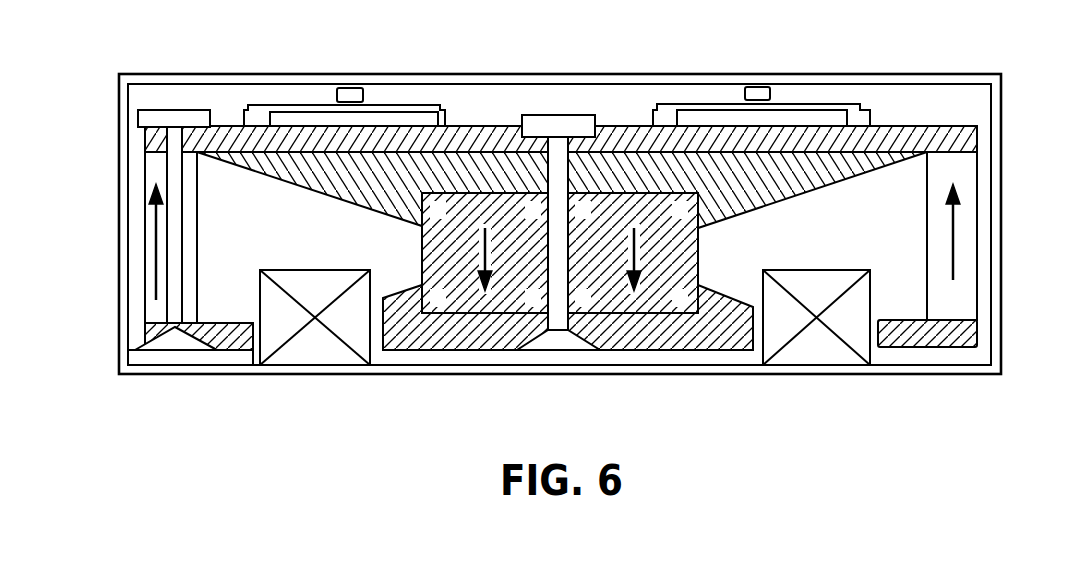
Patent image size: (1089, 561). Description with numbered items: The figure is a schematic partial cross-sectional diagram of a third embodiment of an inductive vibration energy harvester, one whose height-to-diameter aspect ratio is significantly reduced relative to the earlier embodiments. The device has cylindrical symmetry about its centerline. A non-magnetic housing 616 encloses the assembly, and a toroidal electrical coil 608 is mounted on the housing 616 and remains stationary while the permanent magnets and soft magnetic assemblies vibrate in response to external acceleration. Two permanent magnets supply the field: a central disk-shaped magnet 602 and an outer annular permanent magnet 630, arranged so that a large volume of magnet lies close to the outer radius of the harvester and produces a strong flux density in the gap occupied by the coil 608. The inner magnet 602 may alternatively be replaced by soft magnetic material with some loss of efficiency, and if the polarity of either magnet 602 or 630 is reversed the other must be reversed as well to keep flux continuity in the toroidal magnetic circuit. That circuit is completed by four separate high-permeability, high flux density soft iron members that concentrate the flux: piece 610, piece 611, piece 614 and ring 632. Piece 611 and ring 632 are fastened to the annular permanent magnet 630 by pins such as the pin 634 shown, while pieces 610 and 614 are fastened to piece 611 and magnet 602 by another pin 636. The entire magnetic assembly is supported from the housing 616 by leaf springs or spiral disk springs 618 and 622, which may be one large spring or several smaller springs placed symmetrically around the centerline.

The disk-shaped magnet 602 is at (512, 292).
The toroidal electrical coil 608 is at (318, 348).
The soft magnetic piece 610 is at (795, 178).
The soft magnetic piece 611 is at (927, 136).
The soft magnetic piece 614 is at (642, 338).
The non-magnetic housing 616 is at (119, 225).
The spring 618 is at (285, 107).
The spring 622 is at (705, 105).
The annular permanent magnet 630 is at (963, 170).
The ring 632 is at (925, 335).
The pin 634 is at (173, 118).
The pin 636 is at (572, 115).